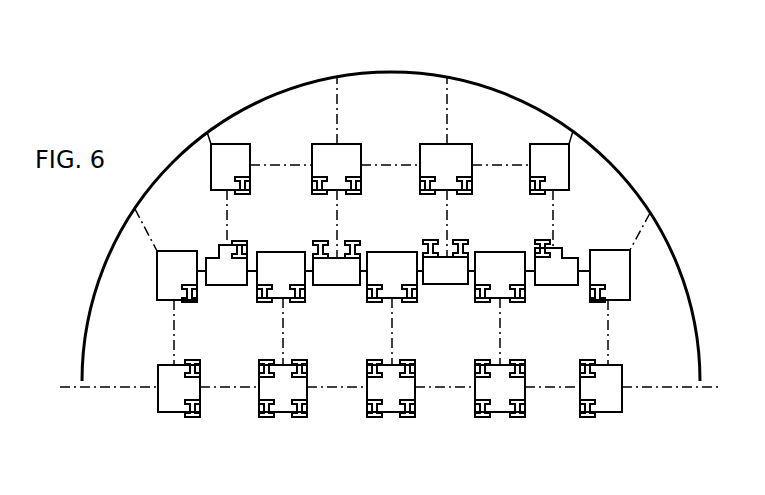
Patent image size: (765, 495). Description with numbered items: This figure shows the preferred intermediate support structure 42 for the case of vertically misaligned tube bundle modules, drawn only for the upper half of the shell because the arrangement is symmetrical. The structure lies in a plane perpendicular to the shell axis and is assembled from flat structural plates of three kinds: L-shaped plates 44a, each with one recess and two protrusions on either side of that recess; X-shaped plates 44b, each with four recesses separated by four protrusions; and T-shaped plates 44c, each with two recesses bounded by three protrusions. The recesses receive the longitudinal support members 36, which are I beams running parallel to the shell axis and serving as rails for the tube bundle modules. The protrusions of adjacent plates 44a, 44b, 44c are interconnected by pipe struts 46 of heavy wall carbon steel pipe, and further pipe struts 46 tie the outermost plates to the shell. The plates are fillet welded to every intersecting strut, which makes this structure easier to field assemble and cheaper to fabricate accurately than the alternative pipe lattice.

The intermediate support structure 42 is at (652, 124).
The structural plates 44a is at (165, 278).
The structural plates 44b is at (297, 393).
The structural plates 44c is at (341, 158).
The pipe struts 46 is at (150, 232).
The longitudinal support members 36 is at (313, 241).